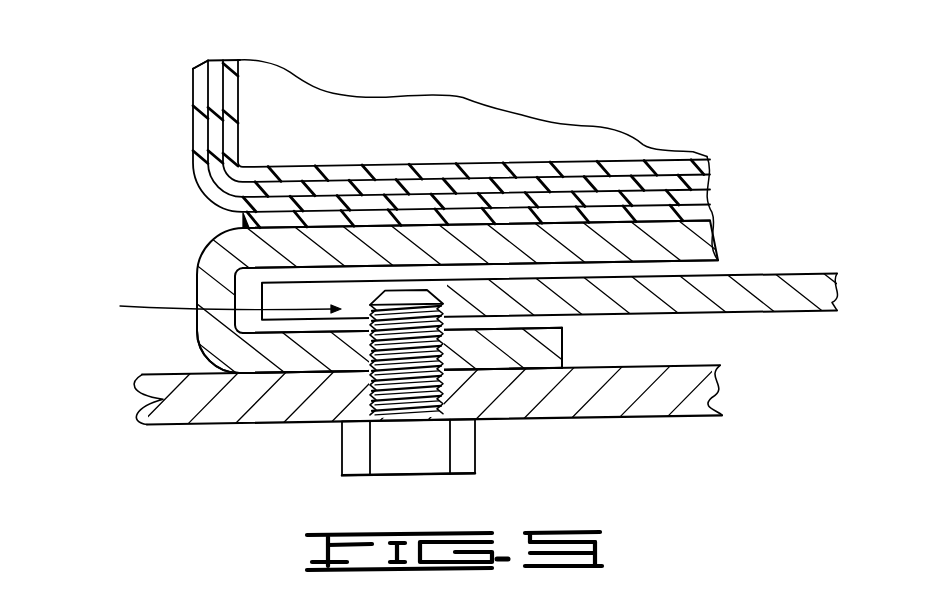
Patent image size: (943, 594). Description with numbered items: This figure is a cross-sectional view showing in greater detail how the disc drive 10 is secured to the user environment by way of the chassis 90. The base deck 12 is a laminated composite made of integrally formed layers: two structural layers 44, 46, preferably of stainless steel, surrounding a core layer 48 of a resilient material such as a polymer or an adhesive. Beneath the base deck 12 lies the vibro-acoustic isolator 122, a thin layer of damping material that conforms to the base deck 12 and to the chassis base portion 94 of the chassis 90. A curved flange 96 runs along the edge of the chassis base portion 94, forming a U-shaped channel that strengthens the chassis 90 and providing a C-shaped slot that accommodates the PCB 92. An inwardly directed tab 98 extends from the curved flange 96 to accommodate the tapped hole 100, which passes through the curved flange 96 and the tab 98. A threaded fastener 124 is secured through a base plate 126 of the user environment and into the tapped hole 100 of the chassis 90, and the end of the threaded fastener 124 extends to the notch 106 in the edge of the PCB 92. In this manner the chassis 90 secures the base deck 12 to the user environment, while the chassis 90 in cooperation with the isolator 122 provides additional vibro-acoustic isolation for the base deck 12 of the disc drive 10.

The disc drive 10 is at (166, 54).
The base deck 12 is at (190, 141).
The structural layer 44 is at (206, 116).
The structural layer 46 is at (233, 122).
The core layer 48 is at (240, 63).
The vibro-acoustic isolator 122 is at (690, 211).
The chassis 90 is at (193, 277).
The chassis base portion 94 is at (675, 243).
The curved flange 96 is at (307, 357).
The tab 98 is at (562, 351).
The PCB 92 is at (805, 290).
The notch 106 is at (209, 307).
The base plate 126 is at (165, 410).
The tapped hole 100 is at (440, 347).
The threaded fastener 124 is at (423, 455).